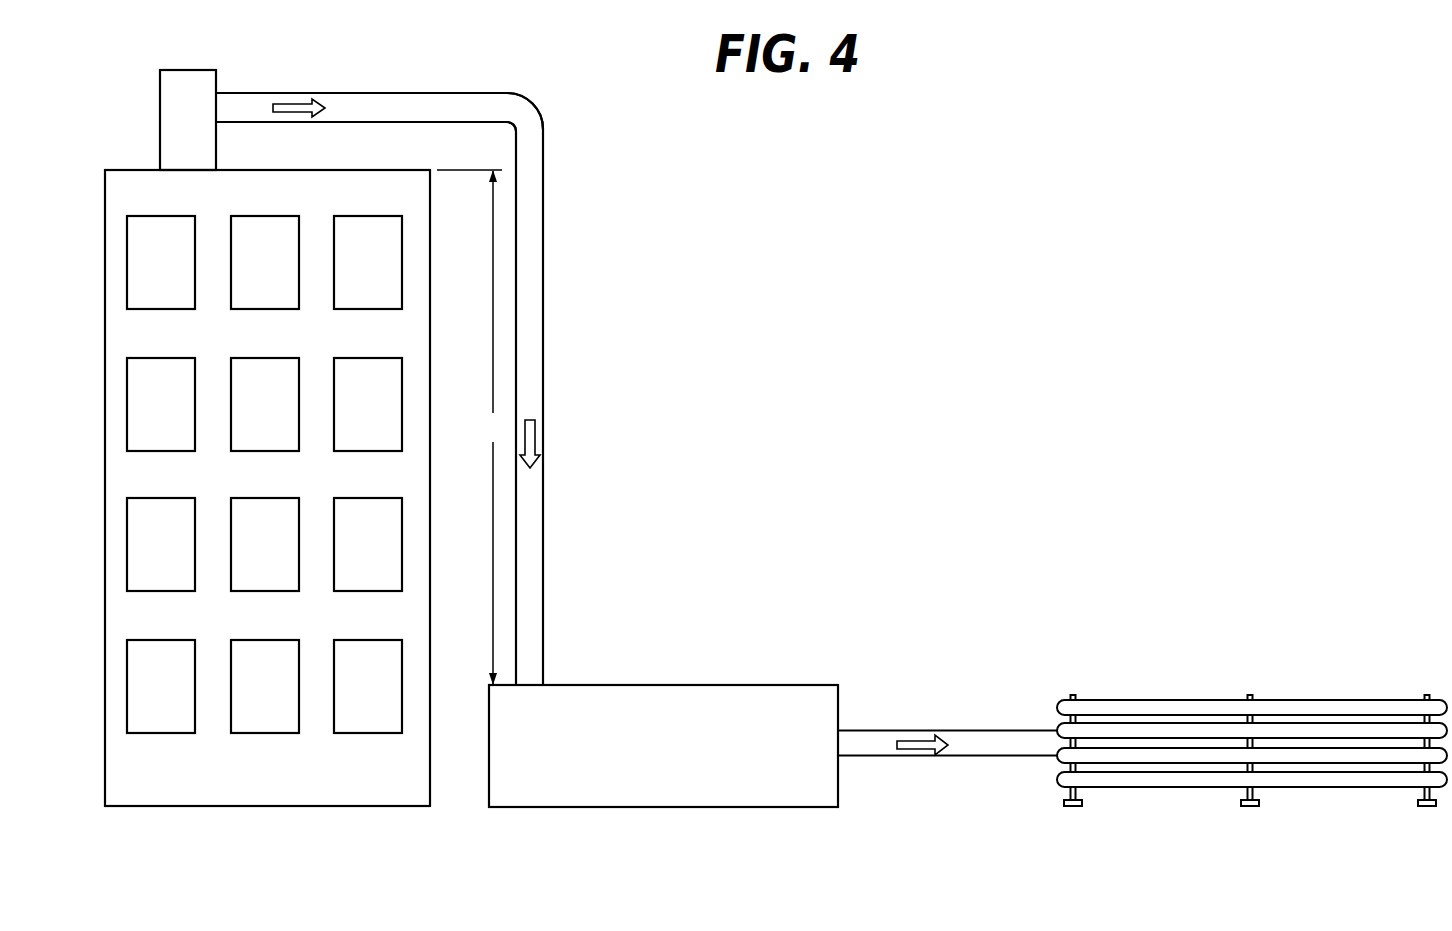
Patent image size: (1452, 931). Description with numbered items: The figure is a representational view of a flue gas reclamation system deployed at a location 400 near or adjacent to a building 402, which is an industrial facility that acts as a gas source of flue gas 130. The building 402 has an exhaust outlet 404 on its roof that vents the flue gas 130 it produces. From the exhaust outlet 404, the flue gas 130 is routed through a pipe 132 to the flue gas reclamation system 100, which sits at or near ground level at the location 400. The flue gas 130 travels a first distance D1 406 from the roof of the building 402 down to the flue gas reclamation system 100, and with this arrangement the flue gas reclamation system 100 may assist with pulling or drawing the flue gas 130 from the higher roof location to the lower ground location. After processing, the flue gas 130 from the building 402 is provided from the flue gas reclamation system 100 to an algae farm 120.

The location 400 is at (977, 216).
The building 402 is at (128, 170).
The exhaust outlet 404 is at (160, 93).
The flue gas 130 is at (298, 92).
The pipe 132 is at (467, 93).
The first distance D1 406 is at (493, 388).
The flue gas reclamation system 100 is at (787, 685).
The algae farm 120 is at (1192, 692).